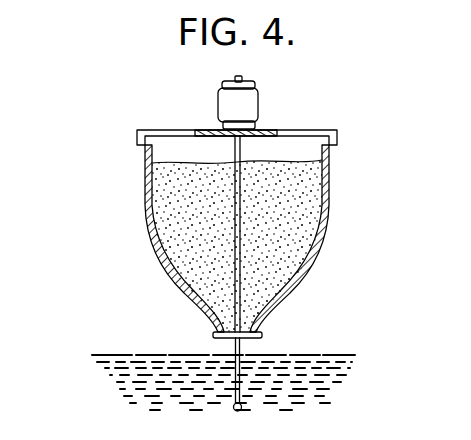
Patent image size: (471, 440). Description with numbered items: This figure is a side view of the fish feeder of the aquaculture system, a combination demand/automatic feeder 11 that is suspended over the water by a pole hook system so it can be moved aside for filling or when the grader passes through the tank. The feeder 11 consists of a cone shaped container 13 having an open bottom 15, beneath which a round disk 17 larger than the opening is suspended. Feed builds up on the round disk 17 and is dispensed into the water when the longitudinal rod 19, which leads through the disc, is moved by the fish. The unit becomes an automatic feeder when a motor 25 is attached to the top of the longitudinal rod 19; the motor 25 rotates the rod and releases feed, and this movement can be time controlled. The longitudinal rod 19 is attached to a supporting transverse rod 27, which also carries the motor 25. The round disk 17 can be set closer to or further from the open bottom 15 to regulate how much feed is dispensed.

The combination demand/automatic feeder 11 is at (138, 193).
The cone shaped container 13 is at (152, 236).
The open bottom 15 is at (218, 329).
The round disk 17 is at (262, 336).
The longitudinal rod 19 is at (234, 388).
The motor 25 is at (256, 96).
The supporting transverse rod 27 is at (138, 135).